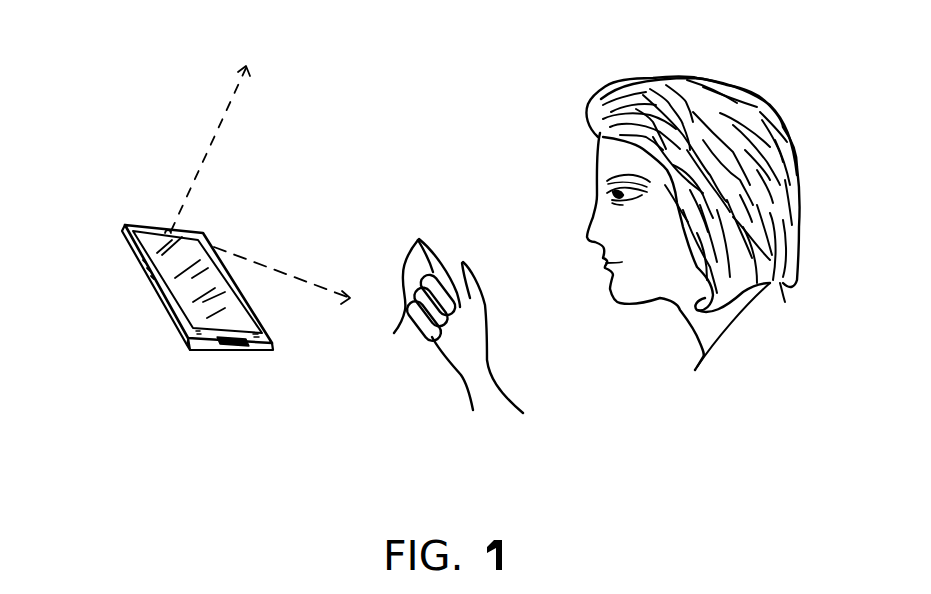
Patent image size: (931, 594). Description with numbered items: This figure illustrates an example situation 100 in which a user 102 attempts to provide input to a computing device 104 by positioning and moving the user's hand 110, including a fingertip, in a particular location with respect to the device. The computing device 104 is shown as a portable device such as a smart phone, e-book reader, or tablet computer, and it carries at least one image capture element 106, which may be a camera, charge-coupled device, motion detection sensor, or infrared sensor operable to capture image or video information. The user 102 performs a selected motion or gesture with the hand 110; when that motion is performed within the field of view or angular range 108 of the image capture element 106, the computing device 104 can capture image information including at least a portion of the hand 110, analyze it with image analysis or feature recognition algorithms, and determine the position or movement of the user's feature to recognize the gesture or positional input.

The example situation 100 is at (97, 109).
The user 102 is at (546, 136).
The computing device 104 is at (257, 350).
The image capture element 106 is at (168, 230).
The field of view or angular range 108 is at (233, 100).
The user's hand 110 is at (368, 326).